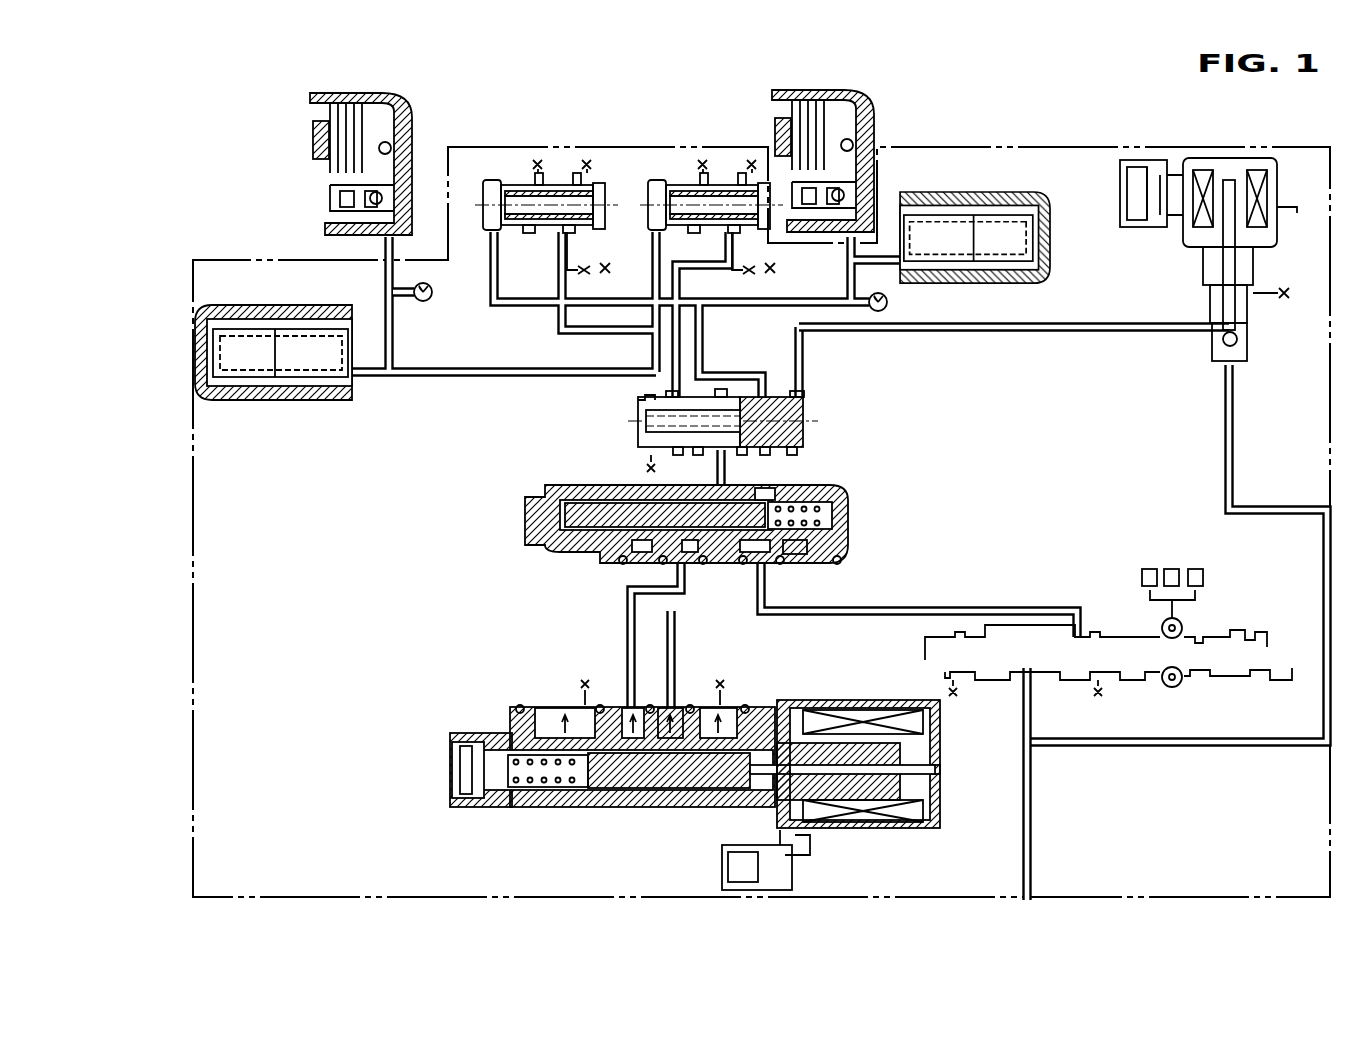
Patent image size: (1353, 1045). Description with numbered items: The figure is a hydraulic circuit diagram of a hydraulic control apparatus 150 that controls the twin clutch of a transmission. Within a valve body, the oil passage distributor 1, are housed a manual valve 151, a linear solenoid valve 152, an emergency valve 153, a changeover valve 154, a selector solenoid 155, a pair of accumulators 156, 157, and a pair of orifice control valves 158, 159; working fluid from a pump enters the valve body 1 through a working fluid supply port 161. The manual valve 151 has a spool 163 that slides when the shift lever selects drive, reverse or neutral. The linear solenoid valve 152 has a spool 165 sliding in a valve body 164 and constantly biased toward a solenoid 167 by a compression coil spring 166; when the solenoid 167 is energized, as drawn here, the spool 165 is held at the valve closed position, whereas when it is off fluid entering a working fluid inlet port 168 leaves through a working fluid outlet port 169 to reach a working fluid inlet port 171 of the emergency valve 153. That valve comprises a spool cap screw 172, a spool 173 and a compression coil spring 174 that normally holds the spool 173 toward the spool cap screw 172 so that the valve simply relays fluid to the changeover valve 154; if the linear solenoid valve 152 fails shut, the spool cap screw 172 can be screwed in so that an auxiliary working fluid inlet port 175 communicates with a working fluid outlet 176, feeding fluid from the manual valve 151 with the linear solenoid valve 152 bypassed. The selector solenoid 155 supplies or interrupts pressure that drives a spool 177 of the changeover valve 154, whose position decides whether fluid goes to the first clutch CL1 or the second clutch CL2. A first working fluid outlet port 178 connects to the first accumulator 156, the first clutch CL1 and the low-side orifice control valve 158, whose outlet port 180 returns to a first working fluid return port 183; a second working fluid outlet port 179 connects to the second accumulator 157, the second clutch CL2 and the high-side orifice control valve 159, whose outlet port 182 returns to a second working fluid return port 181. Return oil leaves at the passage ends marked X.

The oil passage distributor 1 is at (945, 147).
The hydraulic control apparatus 150 is at (1094, 134).
The manual valve 151 is at (1219, 628).
The linear solenoid valve 152 is at (577, 820).
The emergency valve 153 is at (842, 524).
The changeover valve 154 is at (825, 427).
The selector solenoid 155 is at (1167, 269).
The first accumulator 156 is at (995, 195).
The second accumulator 157 is at (278, 400).
The low-side orifice control valve 158 is at (530, 240).
The high-side orifice control valve 159 is at (690, 240).
The working fluid supply port 161 is at (1025, 905).
The spool 163 is at (1150, 685).
The valve body 164 is at (500, 808).
The spool 165 is at (640, 788).
The compression coil spring 166 is at (495, 745).
The solenoid 167 is at (855, 822).
The working fluid inlet port 168 is at (680, 700).
The working fluid outlet port 169 is at (625, 700).
The working fluid inlet port 171 is at (660, 566).
The spool cap screw 172 is at (555, 490).
The spool 173 is at (765, 490).
The compression coil spring 174 is at (830, 497).
The auxiliary working fluid inlet port 175 is at (770, 568).
The working fluid outlet 176 is at (716, 488).
The spool 177 is at (797, 395).
The first working fluid outlet port 178 is at (668, 397).
The second working fluid outlet port 179 is at (752, 378).
The outlet port 180 is at (568, 240).
The second working fluid return port 181 is at (640, 438).
The outlet port 182 is at (725, 240).
The first working fluid return port 183 is at (805, 365).
The first clutch CL1 is at (882, 101).
The second clutch CL2 is at (419, 105).